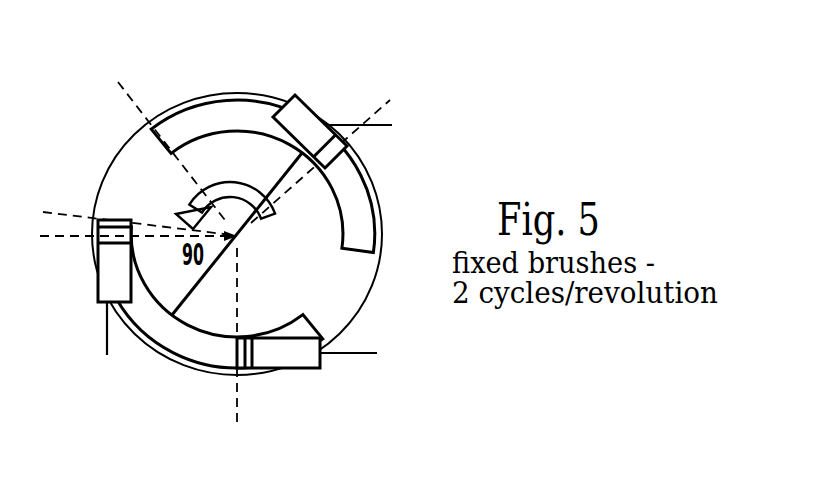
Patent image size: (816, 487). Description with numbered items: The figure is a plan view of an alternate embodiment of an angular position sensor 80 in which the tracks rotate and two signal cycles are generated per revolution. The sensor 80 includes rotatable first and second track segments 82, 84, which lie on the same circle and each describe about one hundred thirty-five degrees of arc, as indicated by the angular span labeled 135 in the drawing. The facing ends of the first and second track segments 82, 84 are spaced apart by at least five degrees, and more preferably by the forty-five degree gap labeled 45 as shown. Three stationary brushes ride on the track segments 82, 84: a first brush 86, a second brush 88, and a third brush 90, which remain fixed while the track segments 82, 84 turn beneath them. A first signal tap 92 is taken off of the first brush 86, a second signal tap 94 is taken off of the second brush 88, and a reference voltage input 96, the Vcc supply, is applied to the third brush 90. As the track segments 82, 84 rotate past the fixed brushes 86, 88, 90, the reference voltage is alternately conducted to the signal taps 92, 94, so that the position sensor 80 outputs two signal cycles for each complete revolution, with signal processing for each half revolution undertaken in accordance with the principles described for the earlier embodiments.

The angular position sensor 80 is at (91, 139).
The first track segment 82 is at (229, 103).
The second track segment 84 is at (100, 217).
The first stationary brush 86 is at (304, 363).
The second stationary brush 88 is at (105, 283).
The third stationary brush 90 is at (313, 123).
The first signal tap 92 is at (366, 355).
The second signal tap 94 is at (107, 338).
The reference voltage input 96 is at (354, 122).
The 45 degree rotation arrow 45 is at (215, 205).
The 135 degree reference line 135 is at (237, 234).